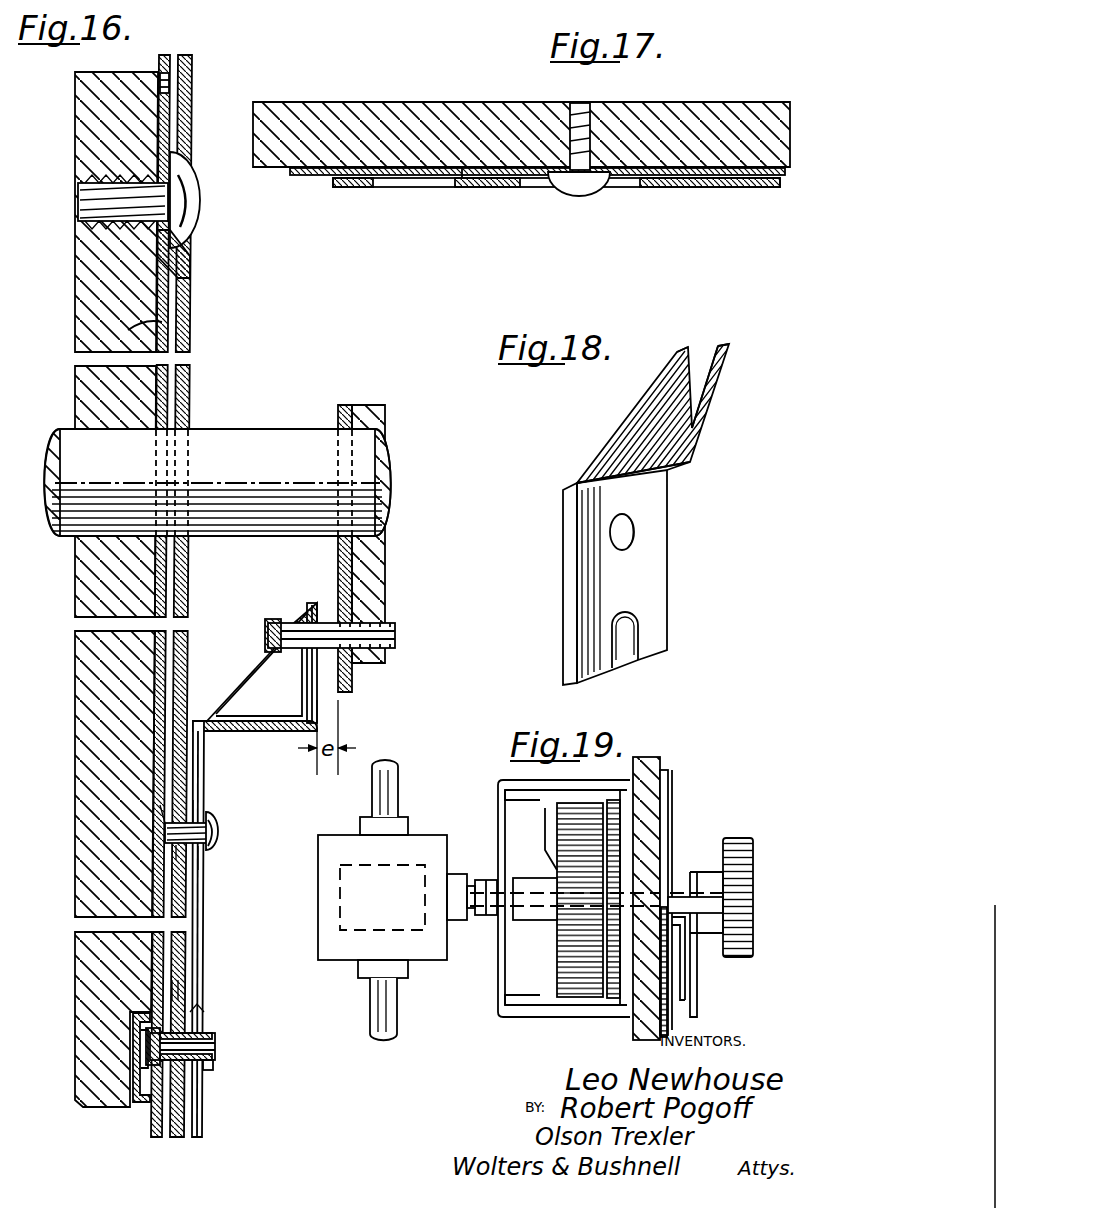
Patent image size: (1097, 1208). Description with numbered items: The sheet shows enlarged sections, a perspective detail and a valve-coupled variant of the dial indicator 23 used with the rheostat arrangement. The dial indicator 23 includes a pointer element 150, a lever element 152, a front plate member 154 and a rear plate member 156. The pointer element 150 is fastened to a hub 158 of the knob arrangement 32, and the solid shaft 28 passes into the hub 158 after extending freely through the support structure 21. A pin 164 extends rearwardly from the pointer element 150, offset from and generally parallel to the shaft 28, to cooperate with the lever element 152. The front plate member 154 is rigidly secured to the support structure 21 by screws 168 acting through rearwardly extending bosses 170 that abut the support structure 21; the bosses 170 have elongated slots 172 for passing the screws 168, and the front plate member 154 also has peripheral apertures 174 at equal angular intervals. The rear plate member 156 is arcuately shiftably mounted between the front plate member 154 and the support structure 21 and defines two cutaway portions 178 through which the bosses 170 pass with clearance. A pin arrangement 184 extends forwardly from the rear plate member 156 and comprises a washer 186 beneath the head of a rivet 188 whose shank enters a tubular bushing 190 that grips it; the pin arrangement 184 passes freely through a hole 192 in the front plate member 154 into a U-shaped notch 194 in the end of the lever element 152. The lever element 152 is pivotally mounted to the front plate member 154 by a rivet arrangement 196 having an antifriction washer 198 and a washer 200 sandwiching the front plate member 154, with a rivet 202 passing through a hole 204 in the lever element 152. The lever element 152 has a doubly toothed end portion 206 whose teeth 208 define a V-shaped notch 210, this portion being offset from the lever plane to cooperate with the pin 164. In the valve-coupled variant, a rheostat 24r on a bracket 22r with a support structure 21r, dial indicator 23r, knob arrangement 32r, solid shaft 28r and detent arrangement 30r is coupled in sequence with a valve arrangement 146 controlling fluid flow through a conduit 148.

In FIG. 16, the support structure 21 is at (92, 1050).
In FIG. 17, the support structure 21 is at (760, 143).
In FIG. 16, the dial indicator 23 is at (247, 612).
In FIG. 16, the solid shaft 28 is at (318, 476).
In FIG. 16, the knob arrangement 32 is at (400, 576).
In FIG. 16, the valve arrangement 146 is at (343, 990).
In FIG. 16, the conduit 148 is at (392, 770).
In FIG. 16, the pointer element 150 is at (338, 410).
In FIG. 16, the lever element 152 is at (272, 736).
In FIG. 18, the lever element 152 is at (650, 489).
In FIG. 16, the front plate member 154 is at (198, 302).
In FIG. 17, the front plate member 154 is at (452, 190).
In FIG. 16, the rear plate member 156 is at (156, 388).
In FIG. 17, the rear plate member 156 is at (365, 166).
In FIG. 16, the hub 158 is at (388, 612).
In FIG. 16, the pin 164 is at (397, 636).
In FIG. 16, the screws 168 is at (95, 186).
In FIG. 17, the screws 168 is at (590, 196).
In FIG. 16, the bosses 170 is at (192, 255).
In FIG. 17, the bosses 170 is at (680, 190).
In FIG. 17, the elongated slots 172 is at (490, 188).
In FIG. 17, the apertures 174 is at (365, 188).
In FIG. 16, the cutaway portions 178 is at (165, 335).
In FIG. 17, the cutaway portions 178 is at (462, 166).
In FIG. 16, the pin arrangement 184 is at (212, 1024).
In FIG. 16, the washer 186 is at (148, 1068).
In FIG. 16, the rivet 188 is at (138, 1052).
In FIG. 16, the tubular bushing 190 is at (206, 1070).
In FIG. 16, the hole 192 is at (180, 1002).
In FIG. 16, the U-shaped notch 194 is at (198, 1012).
In FIG. 18, the U-shaped notch 194 is at (630, 658).
In FIG. 16, the rivet arrangement 196 is at (212, 846).
In FIG. 16, the antifriction washer 198 is at (205, 806).
In FIG. 16, the washer 200 is at (182, 853).
In FIG. 16, the rivet 202 is at (212, 827).
In FIG. 16, the hole 204 is at (204, 868).
In FIG. 18, the hole 204 is at (636, 535).
In FIG. 18, the doubly toothed end portion 206 is at (616, 418).
In FIG. 16, the teeth 208 is at (257, 666).
In FIG. 18, the teeth 208 is at (690, 356).
In FIG. 18, the V-shaped notch 210 is at (700, 365).
In FIG. 19, the support structure 21r is at (652, 760).
In FIG. 19, the bracket 22r is at (560, 1022).
In FIG. 19, the dial indicator 23r is at (700, 995).
In FIG. 19, the rheostat 24r is at (535, 830).
In FIG. 19, the solid shaft 28r is at (685, 878).
In FIG. 19, the detent arrangement 30r is at (485, 925).
In FIG. 19, the knob arrangement 32r is at (742, 836).